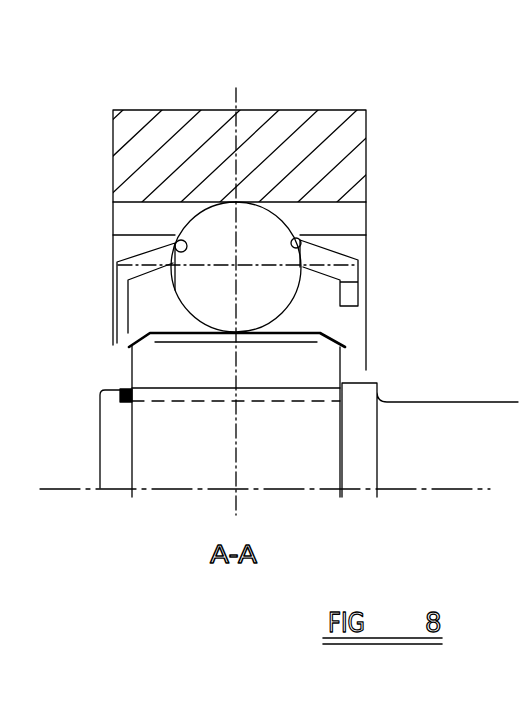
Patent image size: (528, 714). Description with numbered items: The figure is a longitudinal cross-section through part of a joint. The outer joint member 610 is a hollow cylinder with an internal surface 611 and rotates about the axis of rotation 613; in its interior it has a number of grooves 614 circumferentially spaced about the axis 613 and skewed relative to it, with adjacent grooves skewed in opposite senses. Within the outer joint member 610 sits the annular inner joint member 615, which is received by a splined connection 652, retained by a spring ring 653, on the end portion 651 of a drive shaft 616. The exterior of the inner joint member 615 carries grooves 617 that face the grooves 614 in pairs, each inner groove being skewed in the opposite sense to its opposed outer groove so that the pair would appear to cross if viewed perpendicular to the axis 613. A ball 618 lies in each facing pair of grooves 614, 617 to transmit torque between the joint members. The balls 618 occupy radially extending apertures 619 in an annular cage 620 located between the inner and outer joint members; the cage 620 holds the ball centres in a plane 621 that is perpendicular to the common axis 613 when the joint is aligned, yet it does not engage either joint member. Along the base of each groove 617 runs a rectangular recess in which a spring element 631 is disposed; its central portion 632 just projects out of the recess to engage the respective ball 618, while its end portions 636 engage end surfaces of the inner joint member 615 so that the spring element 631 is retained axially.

The outer joint member 610 is at (343, 150).
The plane 621 is at (238, 98).
The grooves 614 is at (358, 215).
The internal surface 611 is at (350, 237).
The balls 618 is at (200, 232).
The apertures 619 is at (172, 243).
The cage 620 is at (120, 277).
The grooves 617 is at (157, 312).
The central portion 632 is at (295, 368).
The inner joint member 615 is at (317, 330).
The end portions 636 is at (337, 345).
The spring element 631 is at (173, 340).
The splined connection 652 is at (312, 395).
The spring ring 653 is at (118, 402).
The end portion 651 is at (170, 467).
The drive shaft 616 is at (436, 455).
The axis of rotation 613 is at (285, 492).